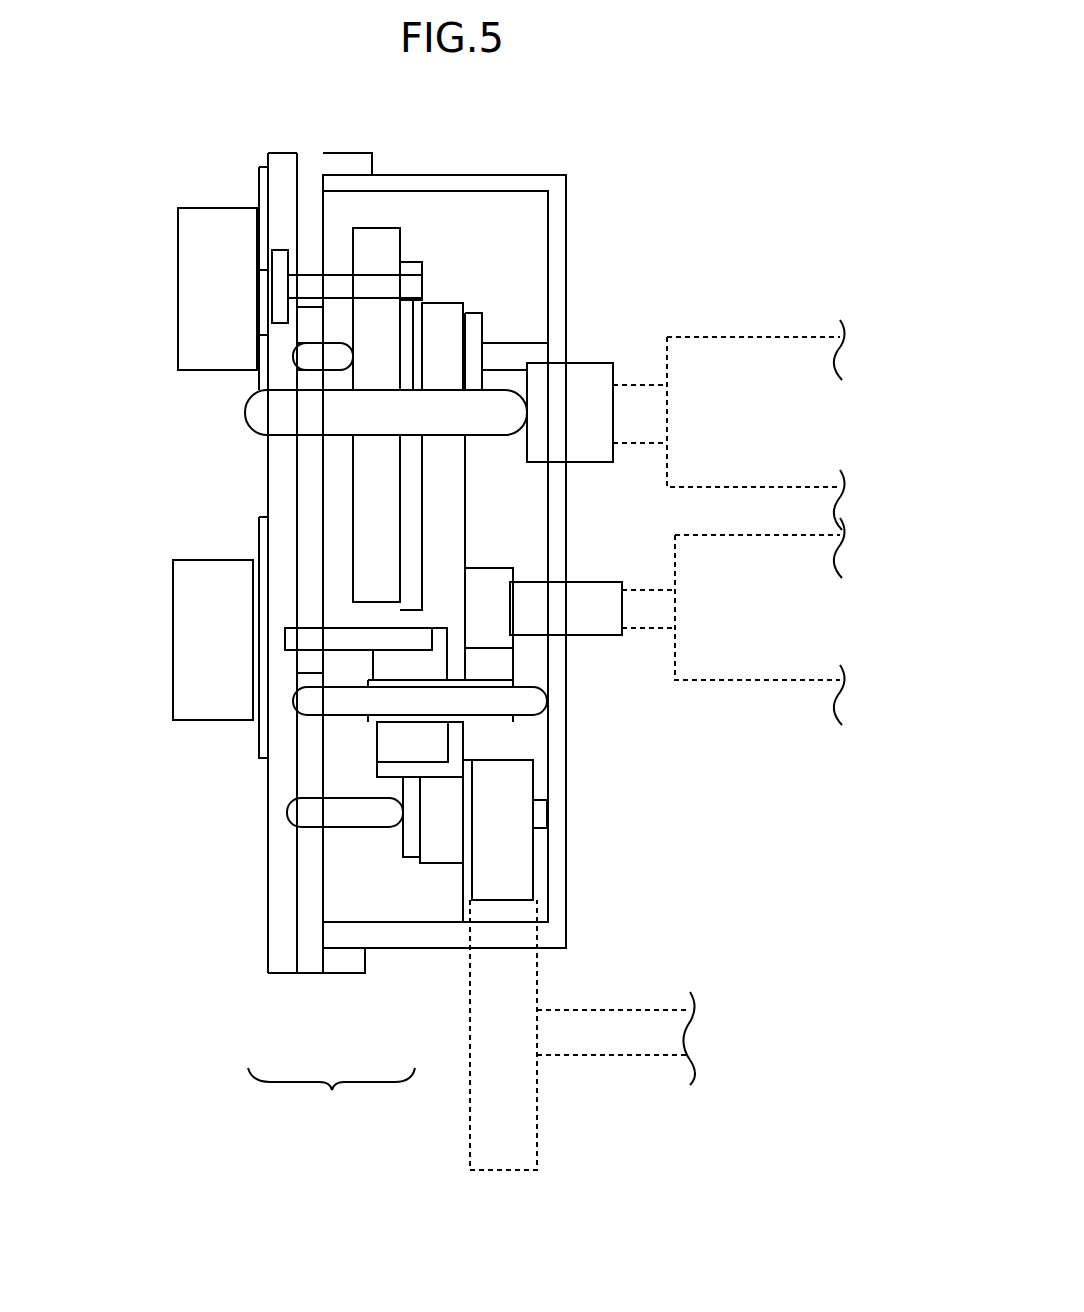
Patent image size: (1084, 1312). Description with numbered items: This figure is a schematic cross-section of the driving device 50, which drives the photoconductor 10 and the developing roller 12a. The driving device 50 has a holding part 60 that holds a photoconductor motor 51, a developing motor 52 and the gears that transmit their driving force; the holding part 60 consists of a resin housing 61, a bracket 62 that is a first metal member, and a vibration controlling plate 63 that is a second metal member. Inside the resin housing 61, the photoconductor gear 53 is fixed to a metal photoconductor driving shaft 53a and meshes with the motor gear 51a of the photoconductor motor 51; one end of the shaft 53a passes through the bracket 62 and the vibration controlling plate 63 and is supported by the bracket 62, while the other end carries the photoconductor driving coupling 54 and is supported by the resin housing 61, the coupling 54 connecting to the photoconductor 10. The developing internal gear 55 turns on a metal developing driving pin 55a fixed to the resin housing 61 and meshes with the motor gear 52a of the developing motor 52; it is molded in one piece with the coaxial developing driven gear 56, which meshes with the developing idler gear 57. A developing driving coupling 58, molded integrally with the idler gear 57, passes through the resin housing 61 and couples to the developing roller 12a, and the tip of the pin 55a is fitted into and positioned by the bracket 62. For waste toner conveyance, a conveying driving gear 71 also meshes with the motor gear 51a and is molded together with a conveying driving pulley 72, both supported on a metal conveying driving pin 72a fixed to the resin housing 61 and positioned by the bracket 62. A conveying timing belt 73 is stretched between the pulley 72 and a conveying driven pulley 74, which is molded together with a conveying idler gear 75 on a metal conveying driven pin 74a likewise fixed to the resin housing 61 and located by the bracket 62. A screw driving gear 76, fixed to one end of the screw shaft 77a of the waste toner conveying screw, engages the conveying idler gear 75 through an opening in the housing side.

The photoconductor 10 is at (740, 337).
The developing roller 12a is at (762, 680).
The driving device 50 is at (607, 195).
The photoconductor motor 51 is at (178, 290).
The motor gear 51a is at (425, 287).
The developing motor 52 is at (173, 625).
The motor gear 52a is at (330, 620).
The photoconductor gear 53 is at (385, 228).
The photoconductor driving shaft 53a is at (248, 410).
The photoconductor driving coupling 54 is at (595, 363).
The developing internal gear 55 is at (380, 747).
The developing driving pin 55a is at (540, 705).
The developing driven gear 56 is at (515, 665).
The developing idler gear 57 is at (478, 568).
The developing driving coupling 58 is at (580, 582).
The holding part 60 is at (331, 1092).
The resin housing 61 is at (390, 950).
The bracket 62 is at (322, 975).
The vibration controlling plate 63 is at (272, 975).
The conveying driving gear 71 is at (410, 265).
The conveying driving pulley 72 is at (470, 315).
The conveying driving pin 72a is at (520, 345).
The conveying timing belt 73 is at (468, 500).
The conveying driven pulley 74 is at (408, 852).
The conveying driven pin 74a is at (355, 825).
The conveying idler gear 75 is at (535, 855).
The screw driving gear 76 is at (470, 1130).
The screw shaft 77a is at (622, 1055).